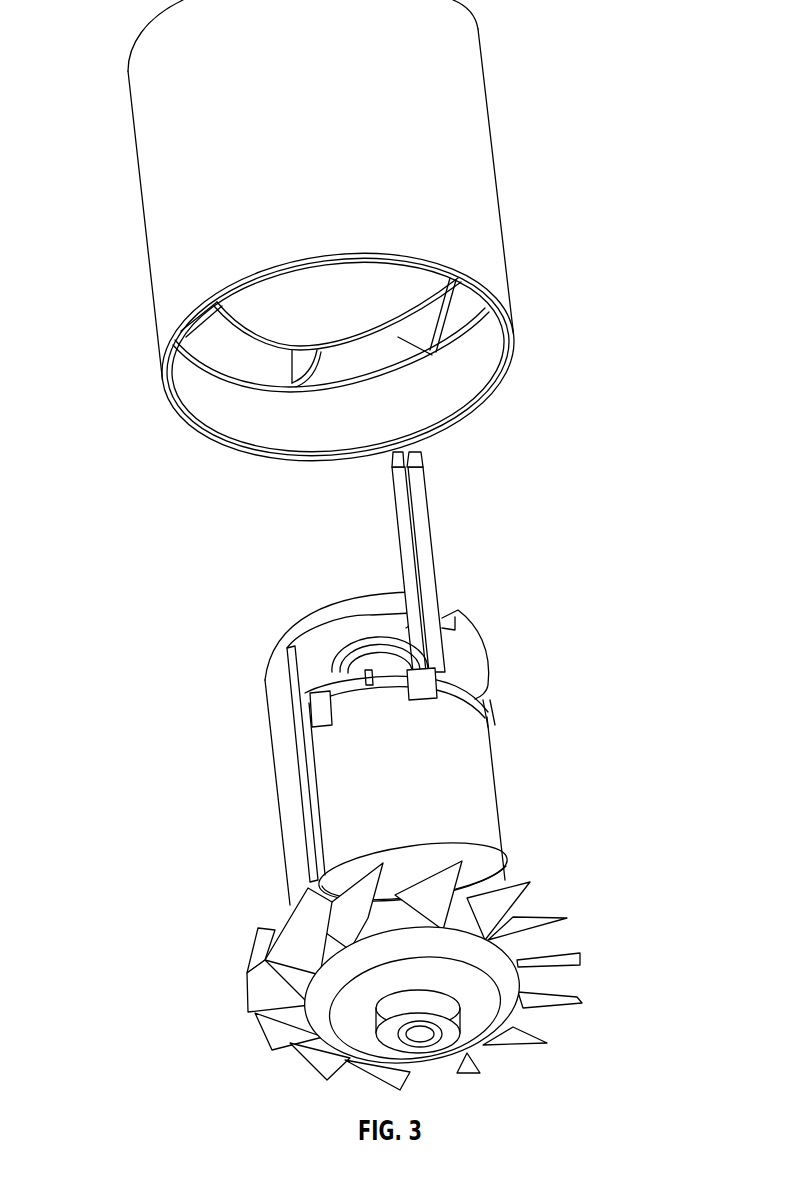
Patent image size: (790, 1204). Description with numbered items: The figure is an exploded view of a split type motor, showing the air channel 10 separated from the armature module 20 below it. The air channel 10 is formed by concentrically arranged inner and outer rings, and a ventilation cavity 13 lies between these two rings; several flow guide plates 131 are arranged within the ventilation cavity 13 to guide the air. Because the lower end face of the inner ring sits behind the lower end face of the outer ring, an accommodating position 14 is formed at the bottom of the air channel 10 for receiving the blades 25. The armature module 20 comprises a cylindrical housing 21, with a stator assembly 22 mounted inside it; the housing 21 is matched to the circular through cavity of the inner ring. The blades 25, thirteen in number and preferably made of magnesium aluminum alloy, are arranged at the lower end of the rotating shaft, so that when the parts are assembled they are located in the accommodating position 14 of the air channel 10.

The air channel 10 is at (503, 200).
The ventilation cavity 13 is at (373, 360).
The flow guide plates 131 is at (435, 327).
The accommodating position 14 is at (258, 408).
The armature module 20 is at (483, 628).
The housing 21 is at (290, 735).
The stator assembly 22 is at (460, 775).
The blades 25 is at (338, 983).